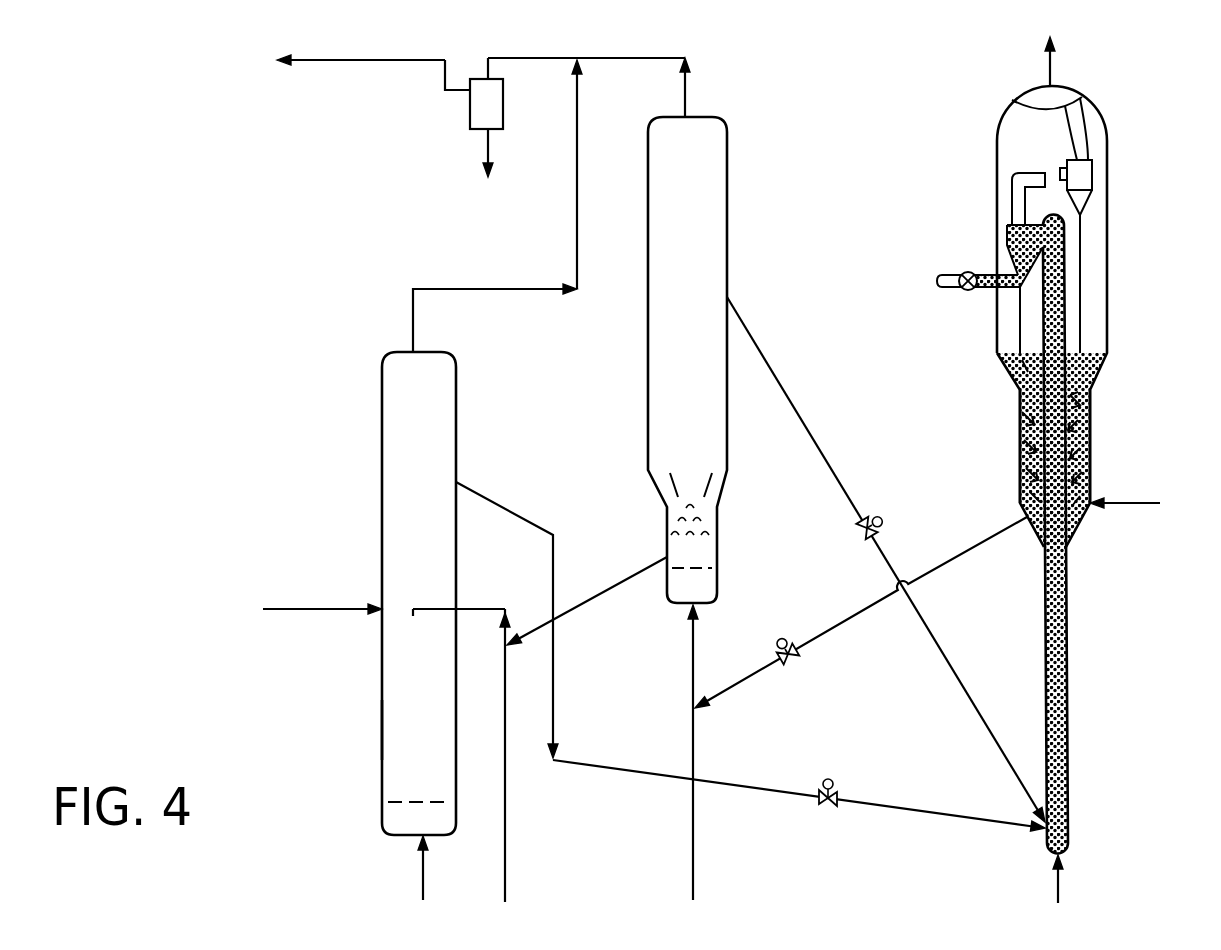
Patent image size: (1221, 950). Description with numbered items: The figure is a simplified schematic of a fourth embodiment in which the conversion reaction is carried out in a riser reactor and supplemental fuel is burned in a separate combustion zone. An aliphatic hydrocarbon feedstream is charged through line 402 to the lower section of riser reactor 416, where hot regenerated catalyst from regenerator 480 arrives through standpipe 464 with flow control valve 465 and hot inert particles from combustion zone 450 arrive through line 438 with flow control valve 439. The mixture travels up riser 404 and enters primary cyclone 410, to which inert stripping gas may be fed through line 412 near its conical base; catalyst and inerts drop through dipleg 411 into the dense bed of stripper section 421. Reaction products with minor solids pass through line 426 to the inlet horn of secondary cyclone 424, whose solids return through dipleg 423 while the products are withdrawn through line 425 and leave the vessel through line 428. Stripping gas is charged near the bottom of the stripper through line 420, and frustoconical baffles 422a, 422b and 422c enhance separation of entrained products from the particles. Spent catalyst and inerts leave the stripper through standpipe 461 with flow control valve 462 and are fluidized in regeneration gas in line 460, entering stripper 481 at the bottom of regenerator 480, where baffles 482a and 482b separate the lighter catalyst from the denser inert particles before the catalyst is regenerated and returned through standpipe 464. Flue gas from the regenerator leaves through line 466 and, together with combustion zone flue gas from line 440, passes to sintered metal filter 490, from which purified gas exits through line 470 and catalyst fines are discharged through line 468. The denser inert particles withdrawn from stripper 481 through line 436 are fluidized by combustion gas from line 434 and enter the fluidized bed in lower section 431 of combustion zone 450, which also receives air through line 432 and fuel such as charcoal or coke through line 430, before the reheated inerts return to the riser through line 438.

The line 402 is at (1062, 890).
The riser 404 is at (1068, 712).
The primary cyclone 410 is at (1007, 238).
The dipleg 411 is at (1003, 322).
The line 412 is at (950, 272).
The riser reactor vessel 416 is at (1108, 297).
The line 420 is at (1128, 503).
The stripper section 421 is at (1020, 453).
The frustoconical baffle 422a is at (1070, 402).
The frustoconical baffle 422b is at (1085, 412).
The frustoconical baffle 422c is at (1085, 425).
The dipleg 423 is at (1083, 252).
The secondary cyclone 424 is at (1085, 177).
The line 425 is at (1075, 120).
The line 426 is at (997, 178).
The line 428 is at (1050, 72).
The line 430 is at (322, 606).
The lower section 431 is at (397, 729).
The line 432 is at (421, 887).
The line 434 is at (508, 876).
The line 436 is at (621, 585).
The line 438 is at (490, 498).
The flow control valve 439 is at (827, 806).
The line 440 is at (478, 288).
The combustion zone 450 is at (437, 461).
The line 460 is at (697, 870).
The standpipe 461 is at (738, 684).
The flow control valve 462 is at (777, 640).
The standpipe 464 is at (948, 662).
The flow control valve 465 is at (860, 530).
The line 466 is at (684, 88).
The line 468 is at (484, 146).
The line 470 is at (360, 65).
The regenerator vessel 480 is at (708, 318).
The stripper 481 is at (712, 520).
The baffle 482a is at (712, 537).
The baffle 482b is at (690, 537).
The sintered metal filter 490 is at (505, 104).